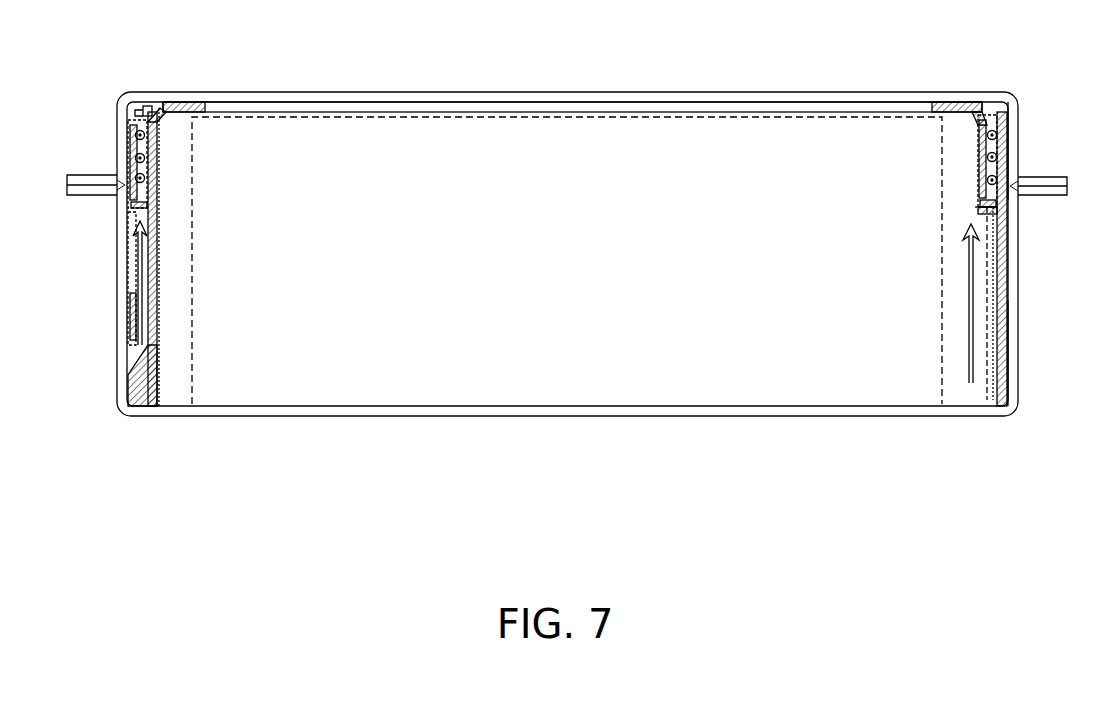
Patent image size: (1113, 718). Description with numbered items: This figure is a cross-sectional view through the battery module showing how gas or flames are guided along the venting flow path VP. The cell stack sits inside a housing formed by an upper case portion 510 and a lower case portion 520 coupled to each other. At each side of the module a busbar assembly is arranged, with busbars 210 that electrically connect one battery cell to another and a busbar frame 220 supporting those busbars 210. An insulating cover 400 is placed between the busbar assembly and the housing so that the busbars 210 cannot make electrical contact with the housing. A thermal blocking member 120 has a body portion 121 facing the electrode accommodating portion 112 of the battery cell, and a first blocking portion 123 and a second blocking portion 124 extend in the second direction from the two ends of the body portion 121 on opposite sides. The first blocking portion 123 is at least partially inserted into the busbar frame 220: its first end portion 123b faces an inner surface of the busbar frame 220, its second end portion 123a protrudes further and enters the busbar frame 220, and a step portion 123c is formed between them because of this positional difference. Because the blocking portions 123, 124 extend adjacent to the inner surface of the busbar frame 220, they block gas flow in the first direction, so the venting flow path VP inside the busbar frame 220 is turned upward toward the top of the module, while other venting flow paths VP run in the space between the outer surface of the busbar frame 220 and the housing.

The upper case portion 510 is at (138, 97).
The lower case portion 520 is at (127, 411).
The busbar frame 220 is at (151, 408).
The busbar 210 is at (150, 326).
The insulating cover 400 is at (131, 300).
The venting flow path VP is at (136, 178).
The thermal blocking member 120 is at (681, 365).
The electrode accommodating portion 112 is at (550, 365).
The body portion 121 is at (424, 365).
The second blocking portion 124 is at (180, 388).
The first blocking portion 123 is at (952, 375).
The second end portion 123a is at (1002, 342).
The first end portion 123b is at (983, 122).
The step portion 123c is at (992, 212).